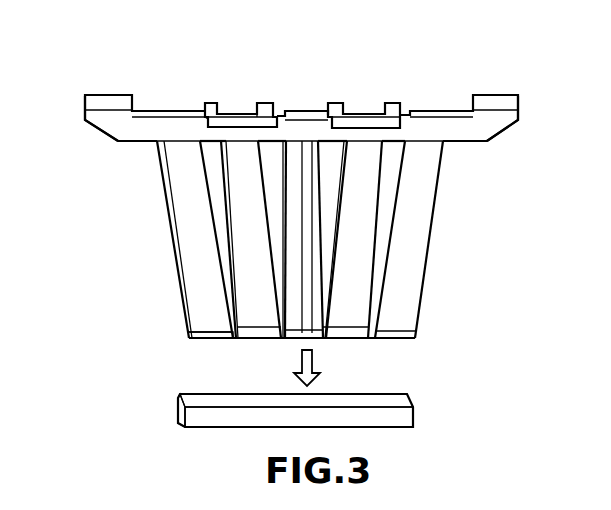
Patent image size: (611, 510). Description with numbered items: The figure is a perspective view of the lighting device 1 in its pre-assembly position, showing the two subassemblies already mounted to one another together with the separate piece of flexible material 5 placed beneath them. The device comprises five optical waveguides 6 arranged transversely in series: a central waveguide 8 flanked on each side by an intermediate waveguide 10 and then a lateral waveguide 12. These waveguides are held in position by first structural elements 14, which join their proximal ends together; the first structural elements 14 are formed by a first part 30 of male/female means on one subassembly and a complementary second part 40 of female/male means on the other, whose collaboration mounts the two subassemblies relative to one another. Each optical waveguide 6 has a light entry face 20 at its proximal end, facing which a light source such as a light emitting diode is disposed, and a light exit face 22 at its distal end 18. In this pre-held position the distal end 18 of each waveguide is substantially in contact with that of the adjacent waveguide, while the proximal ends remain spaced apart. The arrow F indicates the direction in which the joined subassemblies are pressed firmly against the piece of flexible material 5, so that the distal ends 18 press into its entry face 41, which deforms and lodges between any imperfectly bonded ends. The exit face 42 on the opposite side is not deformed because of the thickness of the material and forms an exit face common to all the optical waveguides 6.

The lighting device 1 is at (128, 284).
The piece of flexible material 5 is at (203, 420).
The optical waveguides 6 is at (172, 240).
The central waveguide 8 is at (297, 318).
The intermediate waveguides 10 is at (340, 310).
The lateral waveguides 12 is at (410, 195).
The first structural elements 14 is at (122, 148).
The distal end 18 is at (427, 333).
The light entry face 20 is at (228, 108).
The light exit face 22 is at (221, 340).
The first part 30 is at (367, 106).
The second part 40 is at (520, 129).
The entry face 41 is at (178, 399).
The exit face 42 is at (393, 417).
The arrow F is at (314, 367).